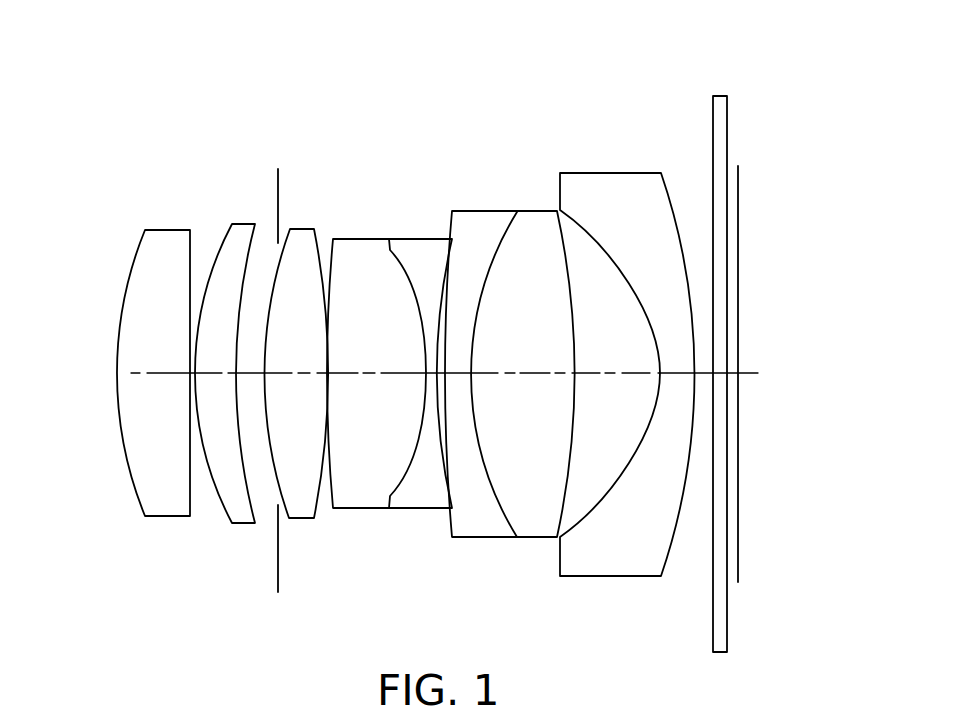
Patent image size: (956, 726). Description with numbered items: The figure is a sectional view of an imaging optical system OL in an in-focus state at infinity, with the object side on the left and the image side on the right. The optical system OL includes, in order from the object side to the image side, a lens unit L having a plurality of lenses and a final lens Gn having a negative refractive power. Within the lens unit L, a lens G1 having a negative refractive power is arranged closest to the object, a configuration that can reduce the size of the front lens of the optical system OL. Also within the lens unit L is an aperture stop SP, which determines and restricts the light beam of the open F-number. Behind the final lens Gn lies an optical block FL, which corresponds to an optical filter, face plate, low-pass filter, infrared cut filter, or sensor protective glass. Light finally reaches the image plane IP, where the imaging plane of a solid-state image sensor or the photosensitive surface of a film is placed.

The optical system OL is at (681, 76).
The lens unit L is at (558, 148).
The final lens Gn is at (681, 148).
The lens G1 is at (175, 502).
The aperture stop SP is at (278, 565).
The optical block FL is at (728, 118).
The image plane IP is at (738, 232).